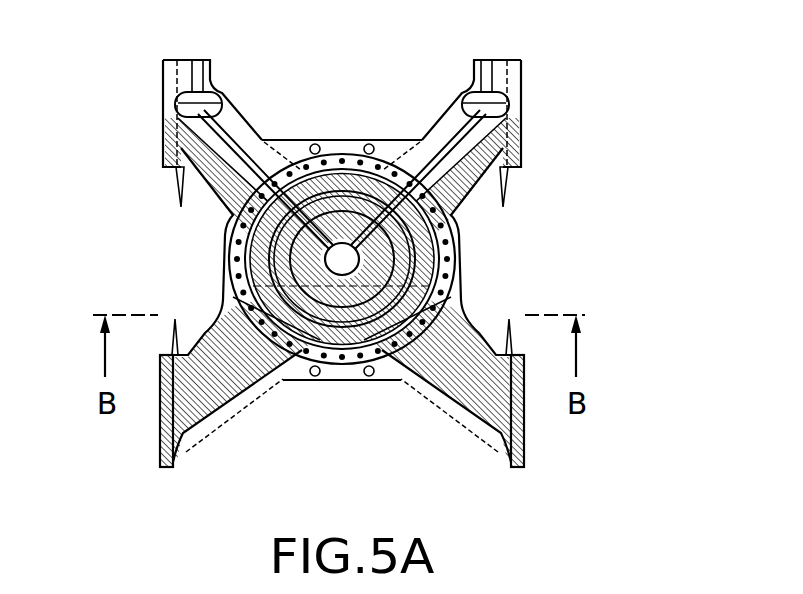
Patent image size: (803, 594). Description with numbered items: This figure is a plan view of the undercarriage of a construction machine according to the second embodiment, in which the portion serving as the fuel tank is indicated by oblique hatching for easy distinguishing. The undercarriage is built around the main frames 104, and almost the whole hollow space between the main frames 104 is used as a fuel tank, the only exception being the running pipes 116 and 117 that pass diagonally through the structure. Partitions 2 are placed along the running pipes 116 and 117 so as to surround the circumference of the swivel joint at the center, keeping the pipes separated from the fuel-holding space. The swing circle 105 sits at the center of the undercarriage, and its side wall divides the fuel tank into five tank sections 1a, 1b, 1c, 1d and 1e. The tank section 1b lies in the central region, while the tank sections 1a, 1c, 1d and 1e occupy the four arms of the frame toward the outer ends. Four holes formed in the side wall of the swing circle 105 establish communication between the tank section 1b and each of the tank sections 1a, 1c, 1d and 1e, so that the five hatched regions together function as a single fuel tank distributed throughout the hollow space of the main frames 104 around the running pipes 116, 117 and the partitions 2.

The tank section 1a is at (222, 383).
The tank section 1b is at (355, 333).
The tank section 1c is at (458, 377).
The tank section 1d is at (175, 140).
The tank section 1e is at (493, 140).
The partitions 2 is at (258, 135).
The main frames 104 is at (227, 225).
The swing circle 105 is at (460, 228).
The running pipe 116 is at (440, 158).
The running pipe 117 is at (247, 130).